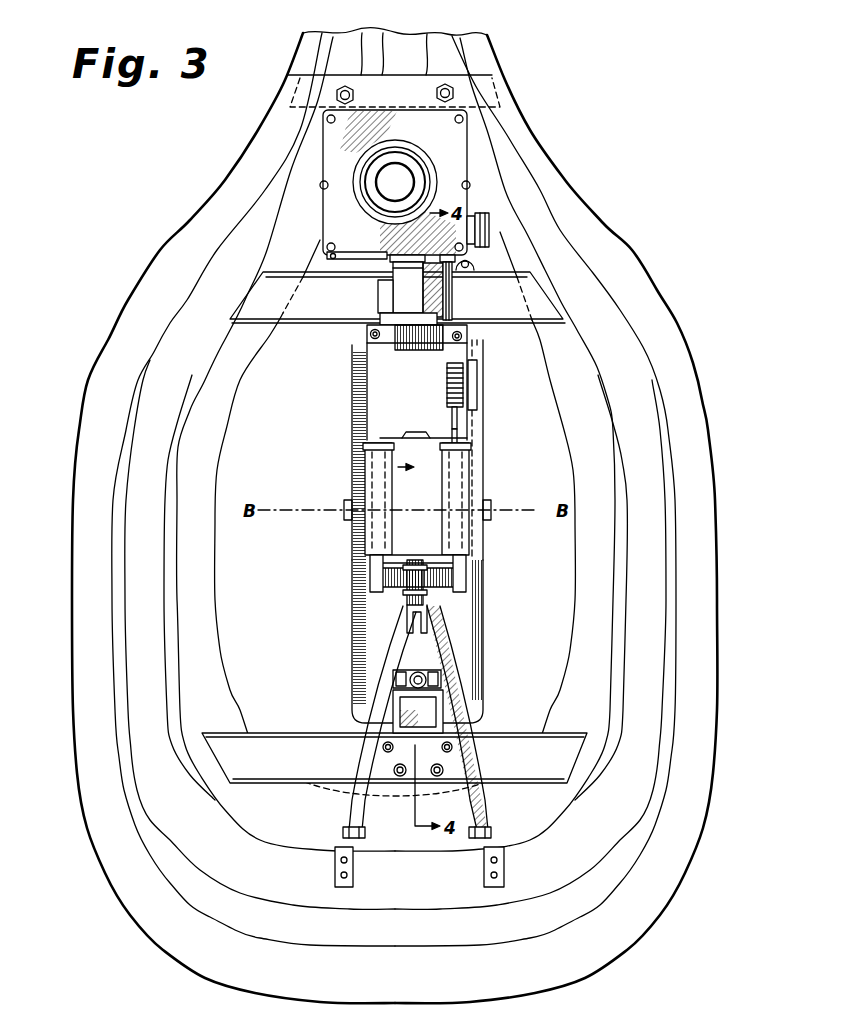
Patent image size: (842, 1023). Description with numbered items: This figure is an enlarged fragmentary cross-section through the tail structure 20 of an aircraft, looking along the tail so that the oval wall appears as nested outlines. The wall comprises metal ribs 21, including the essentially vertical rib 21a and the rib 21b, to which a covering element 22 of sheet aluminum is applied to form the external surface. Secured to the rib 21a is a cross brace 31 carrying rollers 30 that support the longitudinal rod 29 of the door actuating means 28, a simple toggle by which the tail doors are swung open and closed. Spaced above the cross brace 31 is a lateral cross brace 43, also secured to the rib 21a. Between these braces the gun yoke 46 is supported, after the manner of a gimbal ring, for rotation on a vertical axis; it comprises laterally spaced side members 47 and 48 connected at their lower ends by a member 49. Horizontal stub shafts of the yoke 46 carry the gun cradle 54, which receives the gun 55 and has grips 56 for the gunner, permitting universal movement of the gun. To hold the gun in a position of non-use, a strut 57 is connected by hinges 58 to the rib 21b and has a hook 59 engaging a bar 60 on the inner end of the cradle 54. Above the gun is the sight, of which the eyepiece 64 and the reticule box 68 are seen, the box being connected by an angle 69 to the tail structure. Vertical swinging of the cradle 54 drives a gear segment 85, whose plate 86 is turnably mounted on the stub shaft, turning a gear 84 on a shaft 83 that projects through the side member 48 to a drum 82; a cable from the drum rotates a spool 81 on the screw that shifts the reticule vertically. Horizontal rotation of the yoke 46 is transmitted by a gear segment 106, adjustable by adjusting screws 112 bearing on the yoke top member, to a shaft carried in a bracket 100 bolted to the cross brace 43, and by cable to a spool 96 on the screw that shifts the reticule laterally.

The tail structure 20 is at (640, 242).
The metal ribs 21 is at (692, 490).
The rib 21a is at (603, 433).
The rib 21b is at (645, 477).
The covering element 22 is at (692, 340).
The door actuating means 28 is at (428, 670).
The longitudinal rod 29 is at (443, 677).
The rollers 30 is at (395, 678).
The cross brace 31 is at (541, 771).
The lateral cross brace 43 is at (314, 310).
The gun yoke 46 is at (494, 598).
The side member 47 is at (355, 418).
The side member 48 is at (483, 465).
The lower member 49 is at (445, 722).
The gun cradle 54 is at (462, 507).
The gun 55 is at (385, 465).
The grips 56 is at (372, 486).
The strut 57 is at (352, 742).
The hinges 58 is at (490, 835).
The hook 59 is at (410, 598).
The bar 60 is at (390, 587).
The eyepiece 64 is at (376, 201).
The reticule box 68 is at (480, 143).
The angle 69 is at (410, 80).
The spool 81 is at (453, 295).
The drum 82 is at (483, 345).
The shaft 83 is at (472, 377).
The gear 84 is at (447, 383).
The gear segment 85 is at (453, 420).
The plate 86 is at (457, 430).
The spool 96 is at (490, 225).
The bracket 100 is at (395, 293).
The gear segment 106 is at (378, 310).
The adjusting screws 112 is at (368, 338).